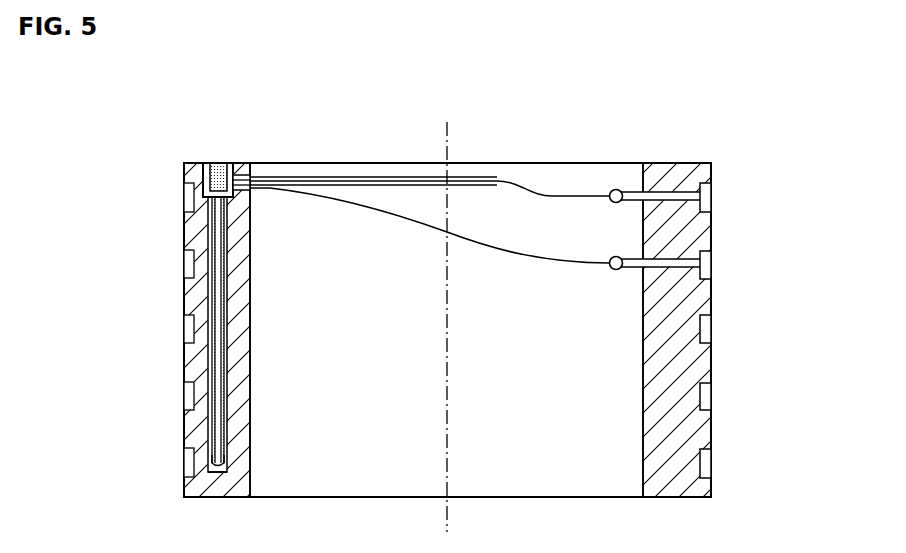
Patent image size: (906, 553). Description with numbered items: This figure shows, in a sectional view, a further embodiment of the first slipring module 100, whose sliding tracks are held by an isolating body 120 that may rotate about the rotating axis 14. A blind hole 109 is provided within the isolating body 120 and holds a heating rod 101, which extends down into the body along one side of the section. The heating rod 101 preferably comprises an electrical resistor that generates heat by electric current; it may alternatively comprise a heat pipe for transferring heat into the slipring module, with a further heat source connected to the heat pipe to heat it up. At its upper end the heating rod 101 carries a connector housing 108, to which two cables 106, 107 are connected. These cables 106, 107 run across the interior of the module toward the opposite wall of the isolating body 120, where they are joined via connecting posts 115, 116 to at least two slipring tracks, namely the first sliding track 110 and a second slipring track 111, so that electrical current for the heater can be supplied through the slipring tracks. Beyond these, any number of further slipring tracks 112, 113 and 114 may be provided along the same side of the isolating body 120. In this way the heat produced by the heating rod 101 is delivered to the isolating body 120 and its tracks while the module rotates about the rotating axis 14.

The rotating axis 14 is at (447, 245).
The first slipring module 100 is at (548, 136).
The heating rod 101 is at (222, 343).
The cable 106 is at (493, 250).
The cable 107 is at (497, 178).
The connector housing 108 is at (220, 163).
The blind hole 109 is at (222, 464).
The first sliding track 110 is at (712, 195).
The slipring track 111 is at (712, 263).
The further slipring track 112 is at (712, 329).
The further slipring track 113 is at (712, 396).
The further slipring track 114 is at (712, 463).
The connecting post 115 is at (619, 189).
The connecting post 116 is at (627, 269).
The isolating body 120 is at (668, 401).